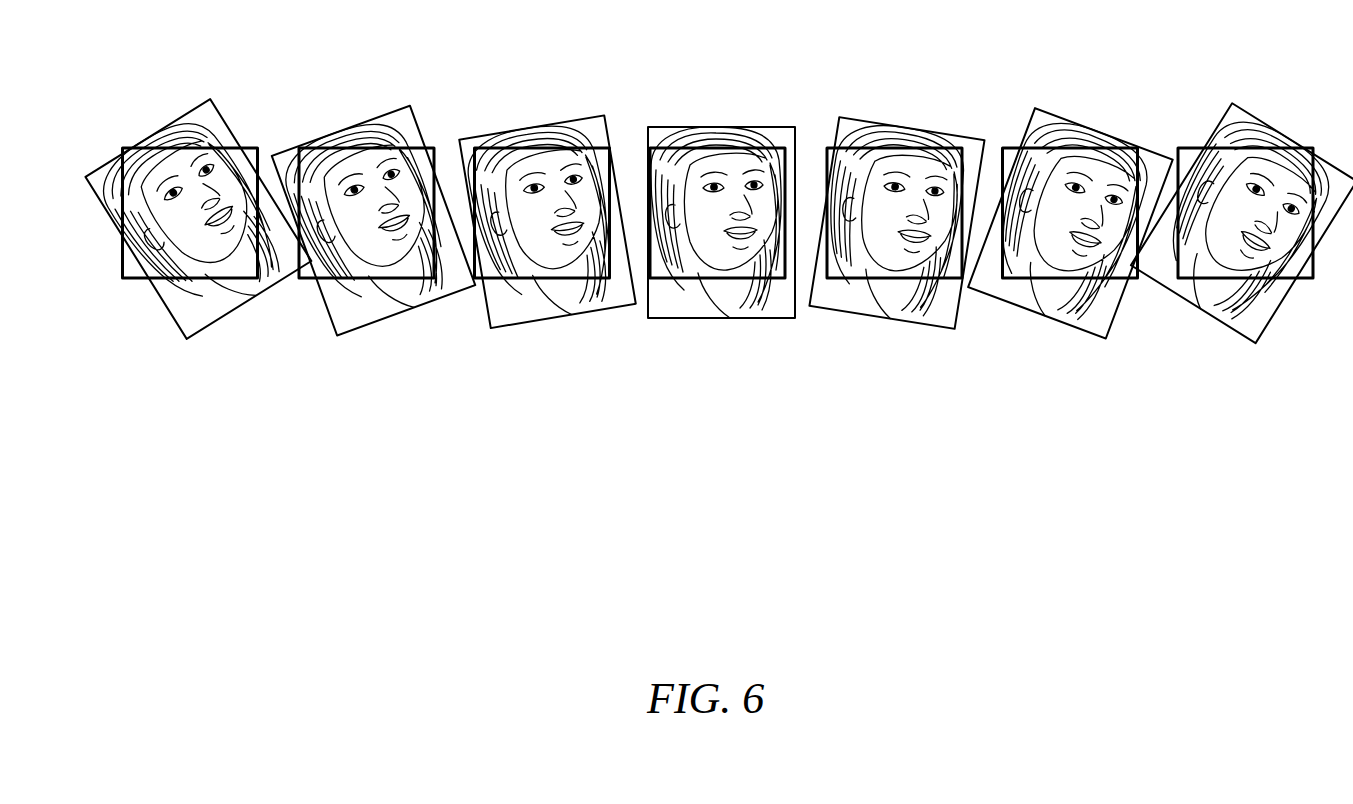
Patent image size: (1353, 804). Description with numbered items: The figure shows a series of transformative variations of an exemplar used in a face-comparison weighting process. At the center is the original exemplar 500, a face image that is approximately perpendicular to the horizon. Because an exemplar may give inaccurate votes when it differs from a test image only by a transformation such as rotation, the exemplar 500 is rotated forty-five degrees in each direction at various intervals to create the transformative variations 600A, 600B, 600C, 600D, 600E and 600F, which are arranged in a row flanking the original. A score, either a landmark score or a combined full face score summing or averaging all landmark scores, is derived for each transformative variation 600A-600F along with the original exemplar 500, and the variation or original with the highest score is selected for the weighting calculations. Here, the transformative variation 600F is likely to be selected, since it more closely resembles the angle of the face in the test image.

The exemplar 500 is at (721, 187).
The transformative variation 600A is at (198, 192).
The transformative variation 600B is at (373, 193).
The transformative variation 600C is at (547, 193).
The transformative variation 600D is at (896, 191).
The transformative variation 600E is at (1070, 198).
The transformative variation 600F is at (1242, 188).